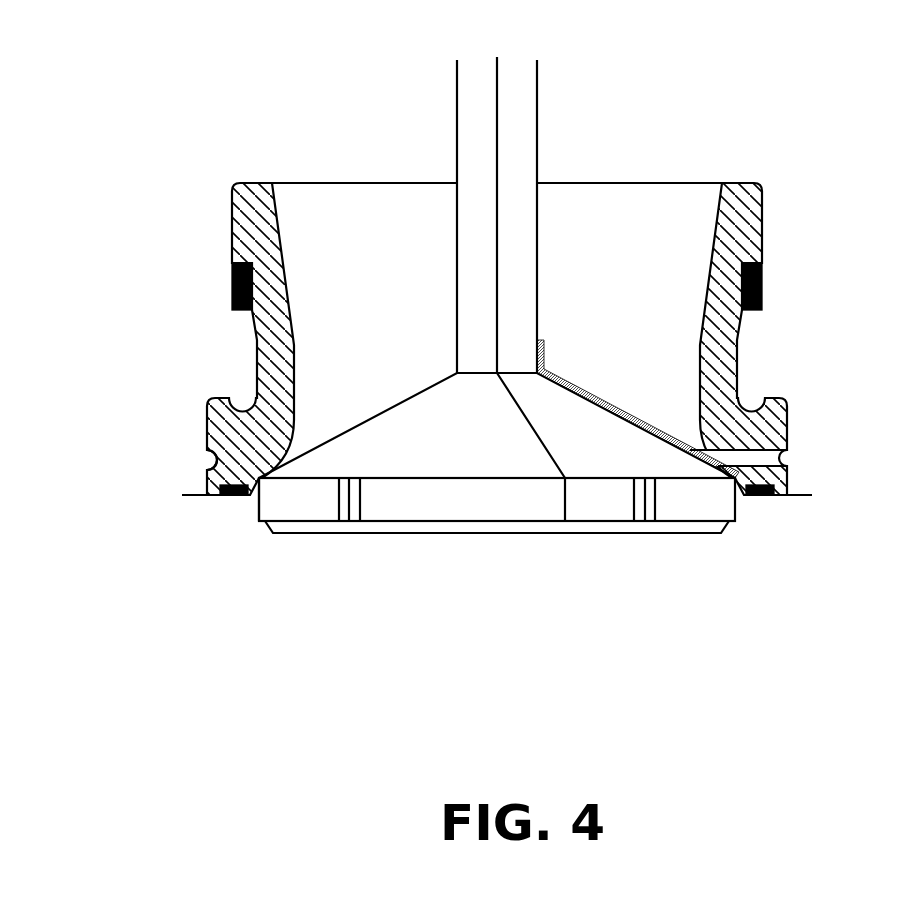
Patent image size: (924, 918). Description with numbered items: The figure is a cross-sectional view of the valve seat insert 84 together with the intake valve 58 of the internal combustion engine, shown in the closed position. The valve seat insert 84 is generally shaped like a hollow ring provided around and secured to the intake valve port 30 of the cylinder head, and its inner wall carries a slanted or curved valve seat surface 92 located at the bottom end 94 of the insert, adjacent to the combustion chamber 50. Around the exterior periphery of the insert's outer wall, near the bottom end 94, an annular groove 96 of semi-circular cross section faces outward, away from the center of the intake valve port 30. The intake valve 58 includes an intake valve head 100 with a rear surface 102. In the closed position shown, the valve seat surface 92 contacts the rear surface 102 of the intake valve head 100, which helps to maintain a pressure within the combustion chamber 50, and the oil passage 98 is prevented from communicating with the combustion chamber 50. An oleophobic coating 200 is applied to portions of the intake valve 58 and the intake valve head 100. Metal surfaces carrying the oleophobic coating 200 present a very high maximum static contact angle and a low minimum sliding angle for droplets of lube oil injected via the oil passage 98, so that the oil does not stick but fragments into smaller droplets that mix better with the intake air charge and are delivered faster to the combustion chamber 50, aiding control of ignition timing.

The intake valve port 30 is at (683, 259).
The combustion chamber 50 is at (518, 573).
The intake valve 58 is at (537, 140).
The valve seat insert 84 is at (800, 126).
The valve seat surface 92 is at (259, 478).
The bottom end 94 is at (203, 487).
The annular groove 96 is at (203, 463).
The oil passage 98 is at (758, 460).
The intake valve head 100 is at (257, 500).
The rear surface 102 is at (370, 416).
The oleophobic coating 200 is at (572, 390).